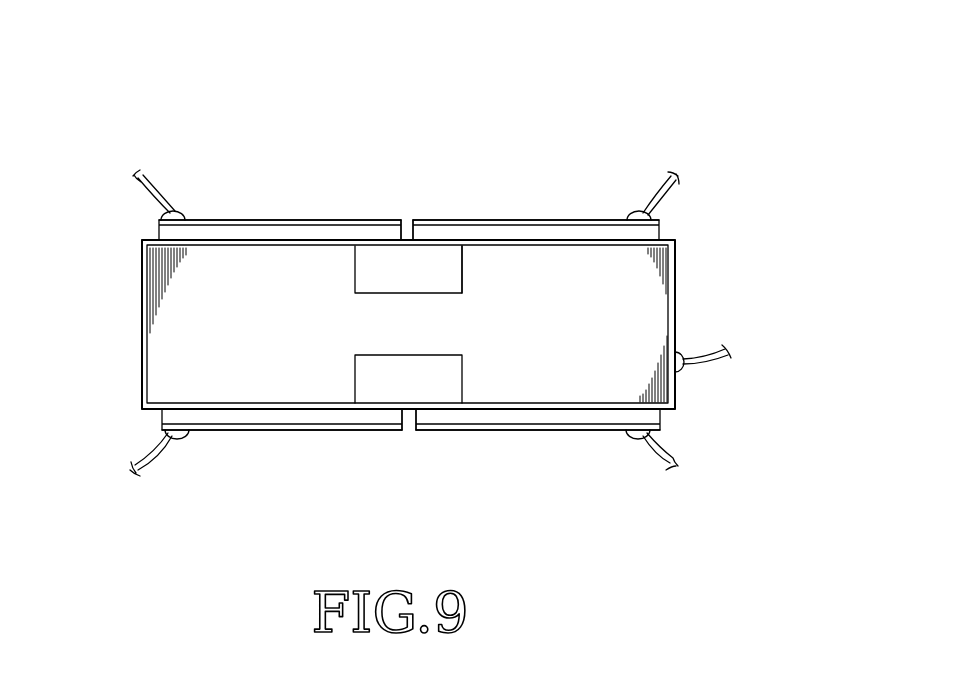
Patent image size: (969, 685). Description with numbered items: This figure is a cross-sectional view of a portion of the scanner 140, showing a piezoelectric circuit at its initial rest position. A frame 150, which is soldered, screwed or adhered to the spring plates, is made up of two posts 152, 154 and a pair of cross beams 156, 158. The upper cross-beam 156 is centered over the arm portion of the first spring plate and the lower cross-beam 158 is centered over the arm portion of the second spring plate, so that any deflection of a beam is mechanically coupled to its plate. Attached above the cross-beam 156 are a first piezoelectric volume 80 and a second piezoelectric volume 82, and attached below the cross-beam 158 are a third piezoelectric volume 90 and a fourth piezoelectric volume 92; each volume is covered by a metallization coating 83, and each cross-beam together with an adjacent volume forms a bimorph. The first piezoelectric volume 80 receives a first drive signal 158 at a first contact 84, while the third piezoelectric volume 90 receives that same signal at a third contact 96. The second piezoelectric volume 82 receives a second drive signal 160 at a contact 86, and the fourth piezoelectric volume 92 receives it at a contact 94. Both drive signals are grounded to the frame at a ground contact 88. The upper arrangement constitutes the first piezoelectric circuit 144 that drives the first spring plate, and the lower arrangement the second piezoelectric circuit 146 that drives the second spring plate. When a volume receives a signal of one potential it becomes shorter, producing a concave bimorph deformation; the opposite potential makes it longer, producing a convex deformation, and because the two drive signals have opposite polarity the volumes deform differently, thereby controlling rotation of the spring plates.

The scanner 140 is at (680, 104).
The frame 150 is at (682, 274).
The post 152 is at (140, 306).
The post 154 is at (676, 312).
The first piezoelectric volume 80 is at (158, 226).
The second piezoelectric volume 82 is at (660, 230).
The metallization coating 83 is at (316, 220).
The first contact 84 is at (180, 211).
The contact 86 is at (637, 211).
The ground contact 88 is at (683, 352).
The third piezoelectric volume 90 is at (660, 415).
The fourth piezoelectric volume 92 is at (158, 417).
The contact 94 is at (187, 437).
The third contact 96 is at (630, 436).
The first piezoelectric circuit 144 is at (414, 203).
The second piezoelectric circuit 146 is at (407, 442).
The cross-beam 156 is at (543, 247).
The cross-beam 158 is at (142, 172).
The second drive signal 160 is at (668, 172).